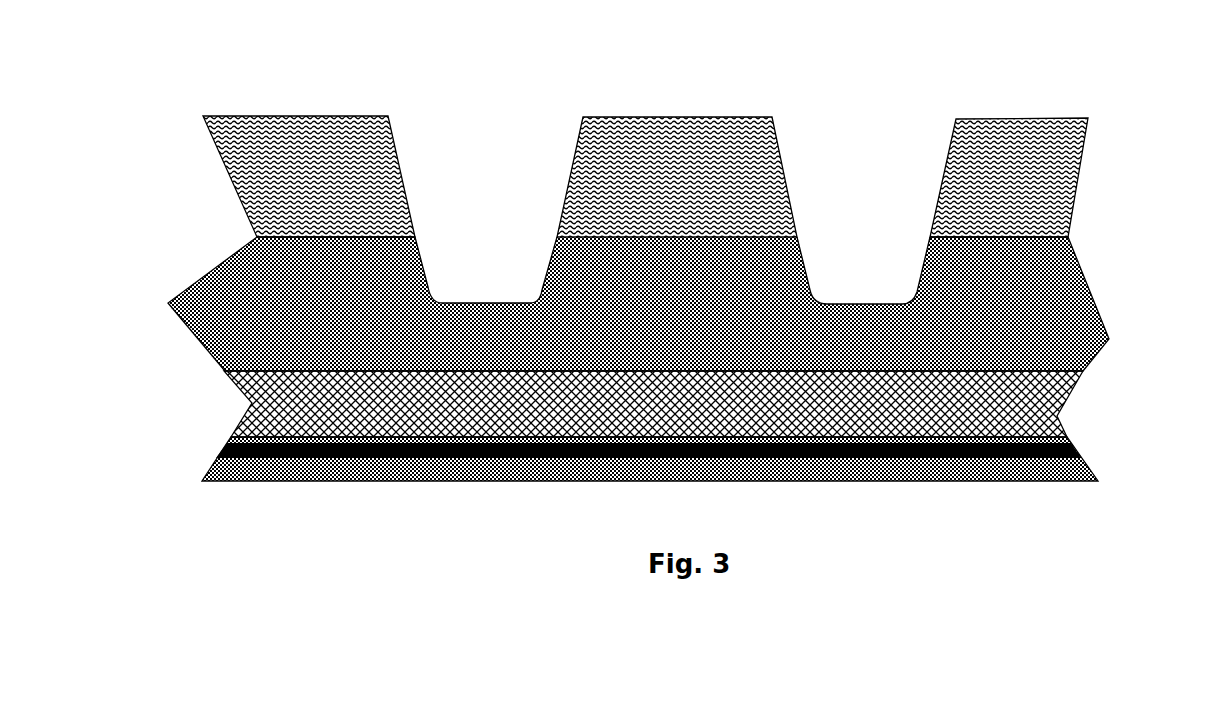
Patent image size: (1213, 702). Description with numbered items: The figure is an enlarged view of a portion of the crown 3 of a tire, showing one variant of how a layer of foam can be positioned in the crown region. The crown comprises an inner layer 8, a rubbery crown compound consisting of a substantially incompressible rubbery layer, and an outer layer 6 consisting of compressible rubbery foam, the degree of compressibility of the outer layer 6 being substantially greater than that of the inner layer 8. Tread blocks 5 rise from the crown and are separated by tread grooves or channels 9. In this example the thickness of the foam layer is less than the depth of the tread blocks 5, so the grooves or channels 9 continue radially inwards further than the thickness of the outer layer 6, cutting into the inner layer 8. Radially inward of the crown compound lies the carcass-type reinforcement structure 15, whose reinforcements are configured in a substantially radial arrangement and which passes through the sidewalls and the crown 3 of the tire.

The tread block 5 is at (282, 111).
The outer layer of foam 6 is at (752, 165).
The inner layer 8 is at (585, 283).
The tread groove 9 is at (873, 235).
The crown 3 is at (1025, 400).
The reinforcement structure 15 is at (1078, 453).